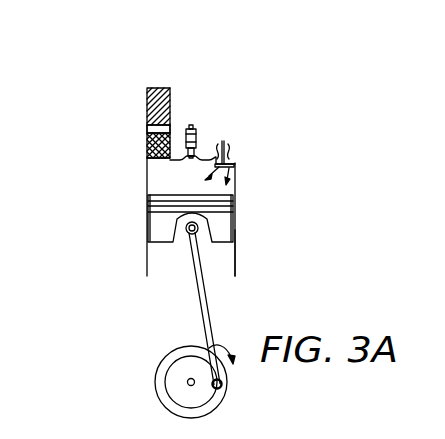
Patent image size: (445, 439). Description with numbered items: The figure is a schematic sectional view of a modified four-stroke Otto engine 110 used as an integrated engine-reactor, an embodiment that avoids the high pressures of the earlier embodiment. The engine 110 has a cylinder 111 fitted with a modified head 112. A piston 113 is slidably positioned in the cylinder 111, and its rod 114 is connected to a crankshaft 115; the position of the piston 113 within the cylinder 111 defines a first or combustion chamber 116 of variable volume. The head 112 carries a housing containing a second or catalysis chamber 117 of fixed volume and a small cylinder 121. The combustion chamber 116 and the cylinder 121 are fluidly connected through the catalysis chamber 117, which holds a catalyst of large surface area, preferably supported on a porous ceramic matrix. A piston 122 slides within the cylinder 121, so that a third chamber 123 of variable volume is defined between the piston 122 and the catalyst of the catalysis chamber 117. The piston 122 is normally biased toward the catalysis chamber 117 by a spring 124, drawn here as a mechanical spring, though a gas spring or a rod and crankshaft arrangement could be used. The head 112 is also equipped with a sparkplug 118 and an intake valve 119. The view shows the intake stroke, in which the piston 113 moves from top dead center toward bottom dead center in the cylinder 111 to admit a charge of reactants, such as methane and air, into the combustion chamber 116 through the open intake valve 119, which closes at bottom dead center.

The four-stroke Otto engine 110 is at (275, 200).
The cylinder 111 is at (237, 254).
The head 112 is at (237, 162).
The piston 113 is at (150, 232).
The rod 114 is at (209, 313).
The crankshaft 115 is at (222, 390).
The combustion chamber 116 is at (149, 175).
The catalysis chamber 117 is at (147, 150).
The sparkplug 118 is at (193, 125).
The intake valve 119 is at (227, 146).
The cylinder 121 is at (147, 97).
The piston 122 is at (147, 131).
The third chamber 123 is at (147, 138).
The spring 124 is at (161, 105).